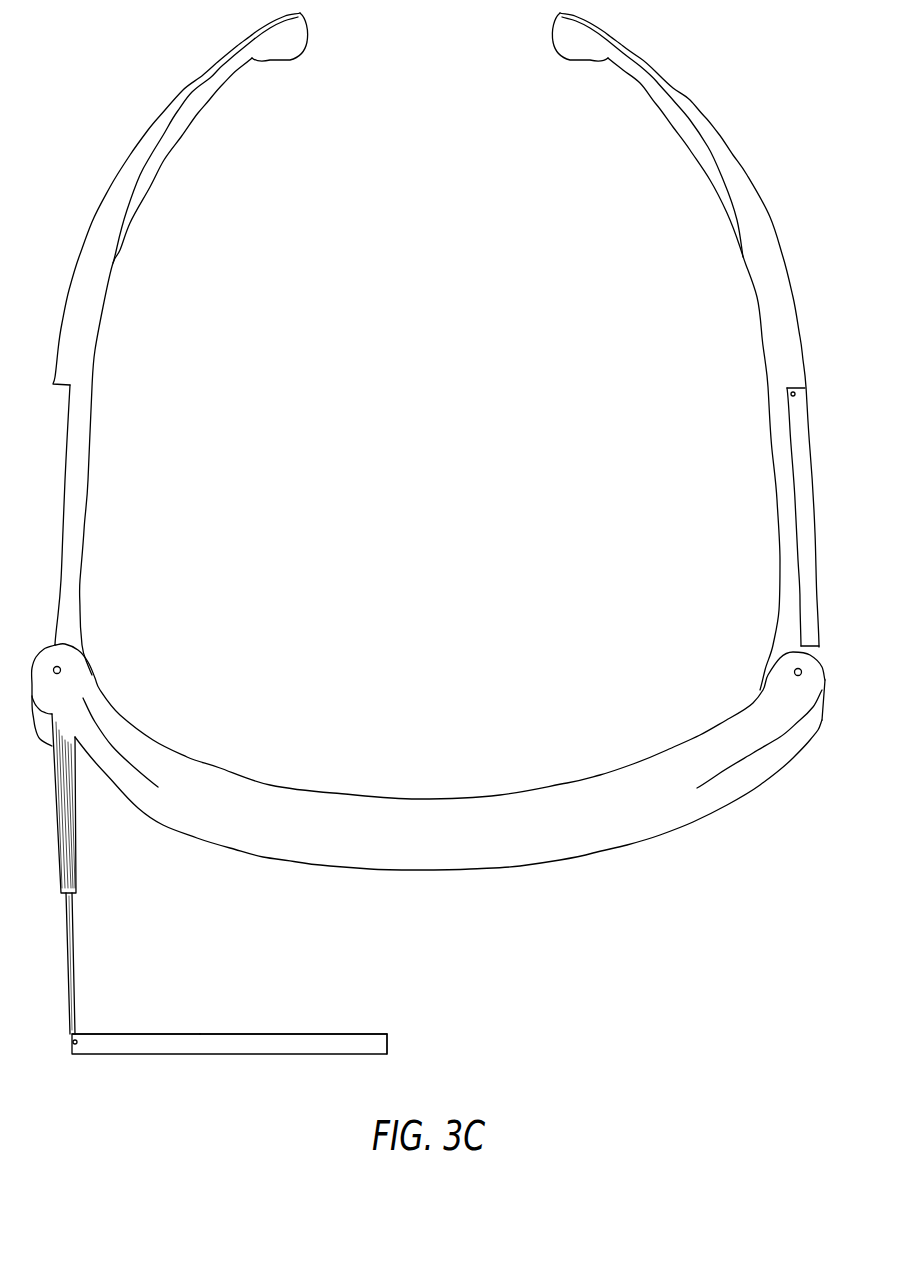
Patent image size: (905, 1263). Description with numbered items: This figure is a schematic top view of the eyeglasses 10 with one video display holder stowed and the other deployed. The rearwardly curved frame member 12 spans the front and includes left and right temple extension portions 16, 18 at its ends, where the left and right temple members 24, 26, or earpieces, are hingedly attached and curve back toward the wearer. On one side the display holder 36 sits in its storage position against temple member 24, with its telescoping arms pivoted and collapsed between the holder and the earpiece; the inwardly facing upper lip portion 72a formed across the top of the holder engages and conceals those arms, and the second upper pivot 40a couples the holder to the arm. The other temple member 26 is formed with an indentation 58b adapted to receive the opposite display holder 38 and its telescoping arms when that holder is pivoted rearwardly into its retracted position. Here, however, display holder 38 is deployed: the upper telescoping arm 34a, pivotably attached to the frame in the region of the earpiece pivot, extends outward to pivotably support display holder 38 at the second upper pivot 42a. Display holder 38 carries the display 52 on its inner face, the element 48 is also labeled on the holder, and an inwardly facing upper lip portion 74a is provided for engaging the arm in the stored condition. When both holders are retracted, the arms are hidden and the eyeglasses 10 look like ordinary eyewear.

The eyeglasses 10 is at (443, 230).
The frame member 12 is at (462, 815).
The temple extension portion 16 is at (770, 701).
The temple extension portion 18 is at (83, 698).
The temple member 24 is at (708, 351).
The temple member 26 is at (160, 344).
The upper telescoping arm 34a is at (77, 885).
The video display holder 36 is at (825, 494).
The video display holder 38 is at (241, 1031).
The second upper pivot 40a is at (795, 393).
The second upper pivot 42a is at (73, 1055).
The top edge of plate 48 is at (287, 1033).
The display 52 is at (135, 1033).
The indentation 58b is at (62, 482).
The upper lip portion 72a is at (803, 455).
The upper lip portion 74a is at (362, 1033).